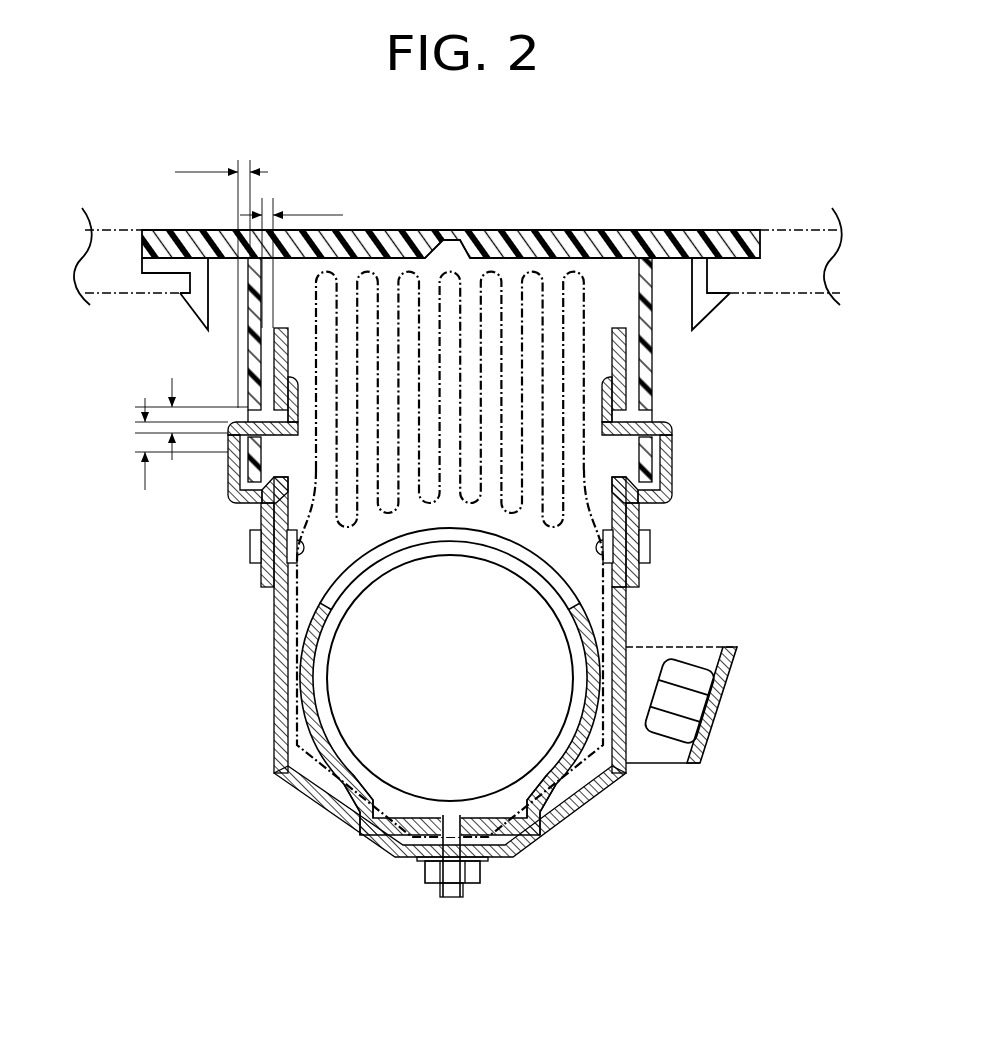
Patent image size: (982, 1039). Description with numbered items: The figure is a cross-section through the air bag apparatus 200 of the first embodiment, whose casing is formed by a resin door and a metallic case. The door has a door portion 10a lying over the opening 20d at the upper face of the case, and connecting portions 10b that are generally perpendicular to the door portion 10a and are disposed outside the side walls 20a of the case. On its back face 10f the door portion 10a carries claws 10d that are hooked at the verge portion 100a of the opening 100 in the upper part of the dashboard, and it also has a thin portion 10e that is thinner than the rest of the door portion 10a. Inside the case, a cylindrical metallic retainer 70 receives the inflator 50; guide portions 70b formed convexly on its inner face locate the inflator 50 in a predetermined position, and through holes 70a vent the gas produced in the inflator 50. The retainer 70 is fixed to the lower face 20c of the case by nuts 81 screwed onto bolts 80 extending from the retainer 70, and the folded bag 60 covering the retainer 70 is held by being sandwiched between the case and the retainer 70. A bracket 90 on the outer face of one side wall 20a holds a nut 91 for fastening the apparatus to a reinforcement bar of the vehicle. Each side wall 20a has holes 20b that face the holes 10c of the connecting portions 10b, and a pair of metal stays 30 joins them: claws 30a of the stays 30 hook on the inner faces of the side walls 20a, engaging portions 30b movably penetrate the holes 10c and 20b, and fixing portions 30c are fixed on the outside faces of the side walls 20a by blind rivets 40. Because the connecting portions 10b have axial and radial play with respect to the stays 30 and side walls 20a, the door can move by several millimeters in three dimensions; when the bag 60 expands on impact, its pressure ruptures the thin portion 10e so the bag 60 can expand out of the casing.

The door portion 10a is at (538, 228).
The connecting portions 10b is at (652, 374).
The holes 10c is at (642, 417).
The claws 10d is at (195, 304).
The thin portion 10e is at (445, 240).
The back face 10f is at (167, 273).
The opening 100 is at (757, 230).
The verge portion 100a is at (715, 272).
The side walls 20a is at (630, 628).
The holes 20b is at (622, 512).
The lower face 20c is at (522, 845).
The opening 20d is at (592, 332).
The stays 30 is at (675, 463).
The claws 30a is at (603, 376).
The engaging portions 30b is at (643, 430).
The fixing portions 30c is at (632, 570).
The blind rivets 40 is at (250, 548).
The inflator 50 is at (380, 685).
The bag 60 is at (365, 272).
The retainer 70 is at (592, 750).
The through holes 70a is at (353, 570).
The guide portions 70b is at (563, 777).
The bolts 80 is at (450, 897).
The nuts 81 is at (430, 873).
The bracket 90 is at (707, 747).
The nut 91 is at (692, 703).
The air bag apparatus 200 is at (278, 928).